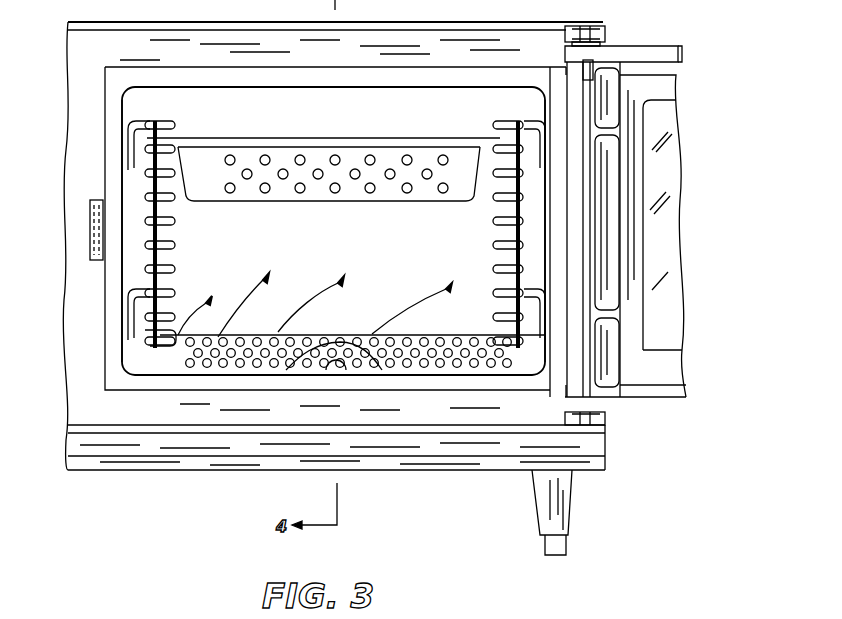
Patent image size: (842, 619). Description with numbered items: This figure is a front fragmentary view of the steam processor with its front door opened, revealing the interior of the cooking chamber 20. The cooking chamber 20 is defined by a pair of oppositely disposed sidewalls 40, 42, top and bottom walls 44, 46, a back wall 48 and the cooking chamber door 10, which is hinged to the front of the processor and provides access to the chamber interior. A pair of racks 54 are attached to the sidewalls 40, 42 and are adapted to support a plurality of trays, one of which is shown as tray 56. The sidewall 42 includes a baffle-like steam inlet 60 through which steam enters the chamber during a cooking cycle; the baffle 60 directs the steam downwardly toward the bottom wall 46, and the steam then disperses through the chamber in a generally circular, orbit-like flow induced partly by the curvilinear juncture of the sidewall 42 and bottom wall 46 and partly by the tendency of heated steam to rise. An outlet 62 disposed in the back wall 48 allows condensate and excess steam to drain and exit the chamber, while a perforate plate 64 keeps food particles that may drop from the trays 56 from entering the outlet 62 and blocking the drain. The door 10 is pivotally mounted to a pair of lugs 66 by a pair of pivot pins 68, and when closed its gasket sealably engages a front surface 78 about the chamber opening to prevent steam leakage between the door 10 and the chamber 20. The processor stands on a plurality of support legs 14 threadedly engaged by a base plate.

The cooking chamber door 10 is at (664, 87).
The support legs 14 is at (556, 502).
The cooking chamber 20 is at (128, 353).
The sidewall 40 is at (544, 260).
The sidewall 42 is at (127, 261).
The top wall 44 is at (343, 88).
The bottom wall 46 is at (419, 372).
The back wall 48 is at (386, 250).
The racks 54 is at (176, 223).
The tray 56 is at (330, 192).
The baffle-like steam inlet 60 is at (138, 335).
The outlet 62 is at (344, 372).
The perforate plate 64 is at (446, 366).
The lugs 66 is at (607, 27).
The pivot pins 68 is at (564, 68).
The front surface 78 is at (272, 76).